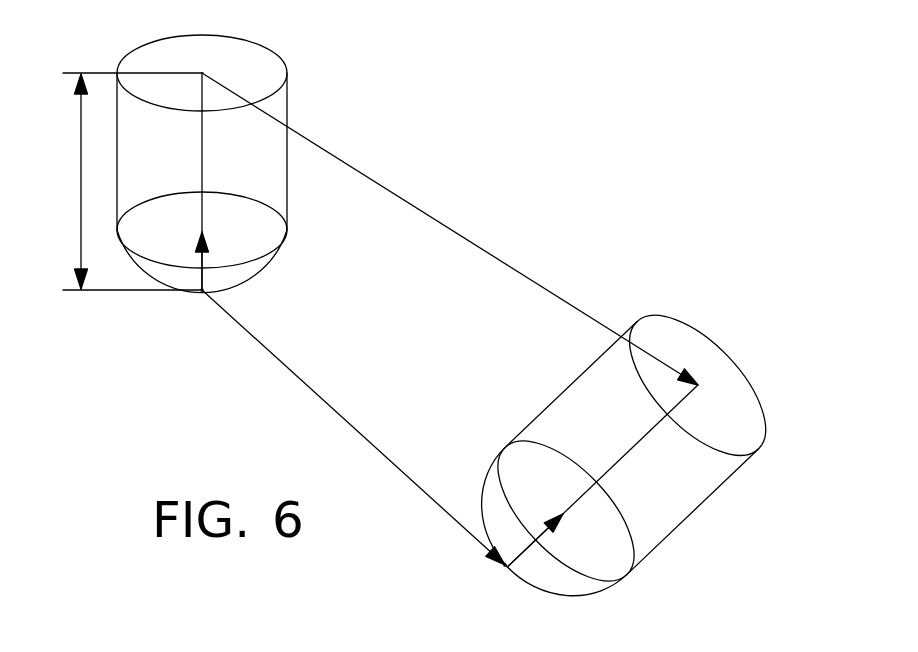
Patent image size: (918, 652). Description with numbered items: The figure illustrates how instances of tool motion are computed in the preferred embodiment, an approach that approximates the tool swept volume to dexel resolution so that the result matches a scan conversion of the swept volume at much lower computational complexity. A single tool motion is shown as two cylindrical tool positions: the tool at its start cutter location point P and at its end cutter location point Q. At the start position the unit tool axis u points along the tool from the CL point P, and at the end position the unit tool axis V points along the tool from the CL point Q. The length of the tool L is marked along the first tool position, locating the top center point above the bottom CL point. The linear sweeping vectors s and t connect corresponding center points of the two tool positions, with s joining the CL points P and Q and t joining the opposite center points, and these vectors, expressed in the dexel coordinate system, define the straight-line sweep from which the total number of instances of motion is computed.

The length of the tool L is at (133, 181).
The unit tool axis at start u is at (202, 245).
The start CL point P is at (203, 313).
The linear sweeping vector of the bottom center point t is at (450, 229).
The linear sweeping vector of the top center point s is at (353, 427).
The unit tool axis at end V is at (547, 528).
The end CL point Q is at (500, 586).